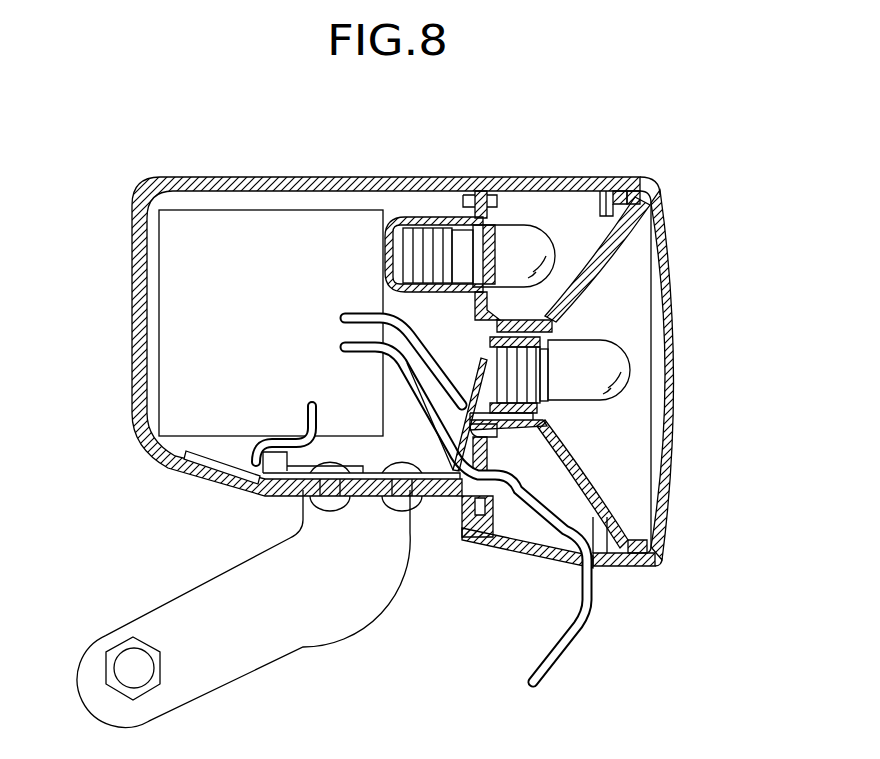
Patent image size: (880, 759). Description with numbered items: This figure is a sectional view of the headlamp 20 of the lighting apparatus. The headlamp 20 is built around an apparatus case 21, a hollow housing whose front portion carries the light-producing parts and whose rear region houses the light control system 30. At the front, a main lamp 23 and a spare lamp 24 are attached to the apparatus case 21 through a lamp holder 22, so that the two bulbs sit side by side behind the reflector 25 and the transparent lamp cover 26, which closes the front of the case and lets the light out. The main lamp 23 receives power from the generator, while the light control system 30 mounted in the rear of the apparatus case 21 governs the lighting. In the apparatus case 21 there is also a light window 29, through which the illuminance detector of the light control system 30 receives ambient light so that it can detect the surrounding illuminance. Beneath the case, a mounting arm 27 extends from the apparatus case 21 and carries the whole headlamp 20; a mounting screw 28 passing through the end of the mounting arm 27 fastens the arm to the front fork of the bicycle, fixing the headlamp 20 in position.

The headlamp 20 is at (643, 145).
The apparatus case 21 is at (335, 190).
The lamp holder 22 is at (480, 191).
The main lamp 23 is at (607, 400).
The spare lamp 24 is at (523, 228).
The reflector 25 is at (587, 253).
The transparent lamp cover 26 is at (667, 331).
The mounting arm 27 is at (294, 644).
The mounting screw 28 is at (130, 662).
The light window 29 is at (216, 478).
The light control system 30 is at (234, 226).